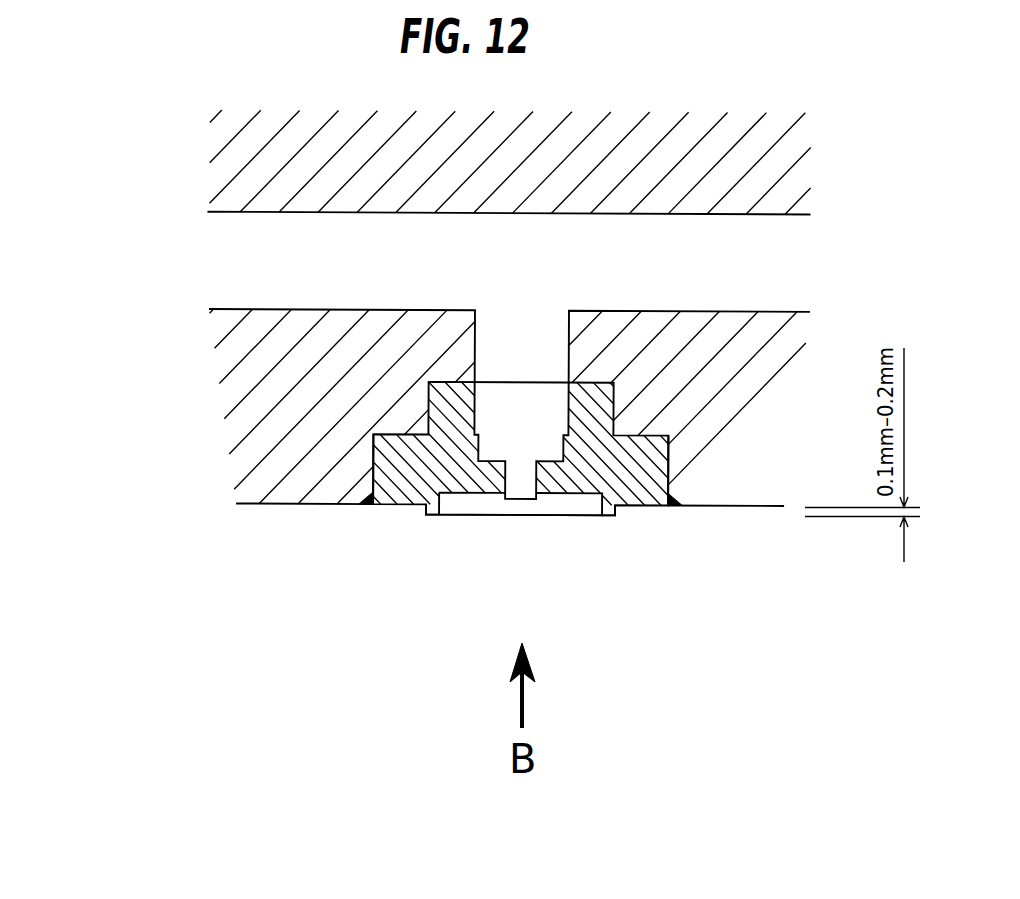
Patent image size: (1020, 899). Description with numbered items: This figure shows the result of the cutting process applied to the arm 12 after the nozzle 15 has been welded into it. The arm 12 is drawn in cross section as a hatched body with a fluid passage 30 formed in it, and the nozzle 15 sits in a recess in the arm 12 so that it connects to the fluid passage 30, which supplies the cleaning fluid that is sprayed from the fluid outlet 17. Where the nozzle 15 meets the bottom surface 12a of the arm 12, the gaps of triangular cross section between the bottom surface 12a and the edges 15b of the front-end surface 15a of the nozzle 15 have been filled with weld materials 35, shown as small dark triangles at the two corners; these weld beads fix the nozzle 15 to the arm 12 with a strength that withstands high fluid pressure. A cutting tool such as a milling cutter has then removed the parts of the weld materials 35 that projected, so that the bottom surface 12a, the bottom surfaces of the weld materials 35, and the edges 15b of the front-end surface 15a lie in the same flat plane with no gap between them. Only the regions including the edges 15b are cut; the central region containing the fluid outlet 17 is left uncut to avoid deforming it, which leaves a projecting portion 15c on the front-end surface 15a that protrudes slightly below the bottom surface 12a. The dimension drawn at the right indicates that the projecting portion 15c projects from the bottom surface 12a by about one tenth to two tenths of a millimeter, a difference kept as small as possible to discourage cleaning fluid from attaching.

The arm 12 is at (186, 363).
The bottom surface of the arm 12a is at (267, 505).
The nozzle 15 is at (576, 522).
The front-end surface of the nozzle 15a is at (427, 512).
The edges of the front-end surface 15b is at (378, 508).
The projecting portion 15c is at (540, 516).
The fluid outlet 17 is at (484, 503).
The fluid passage 30 is at (404, 276).
The weld materials 35 is at (372, 506).